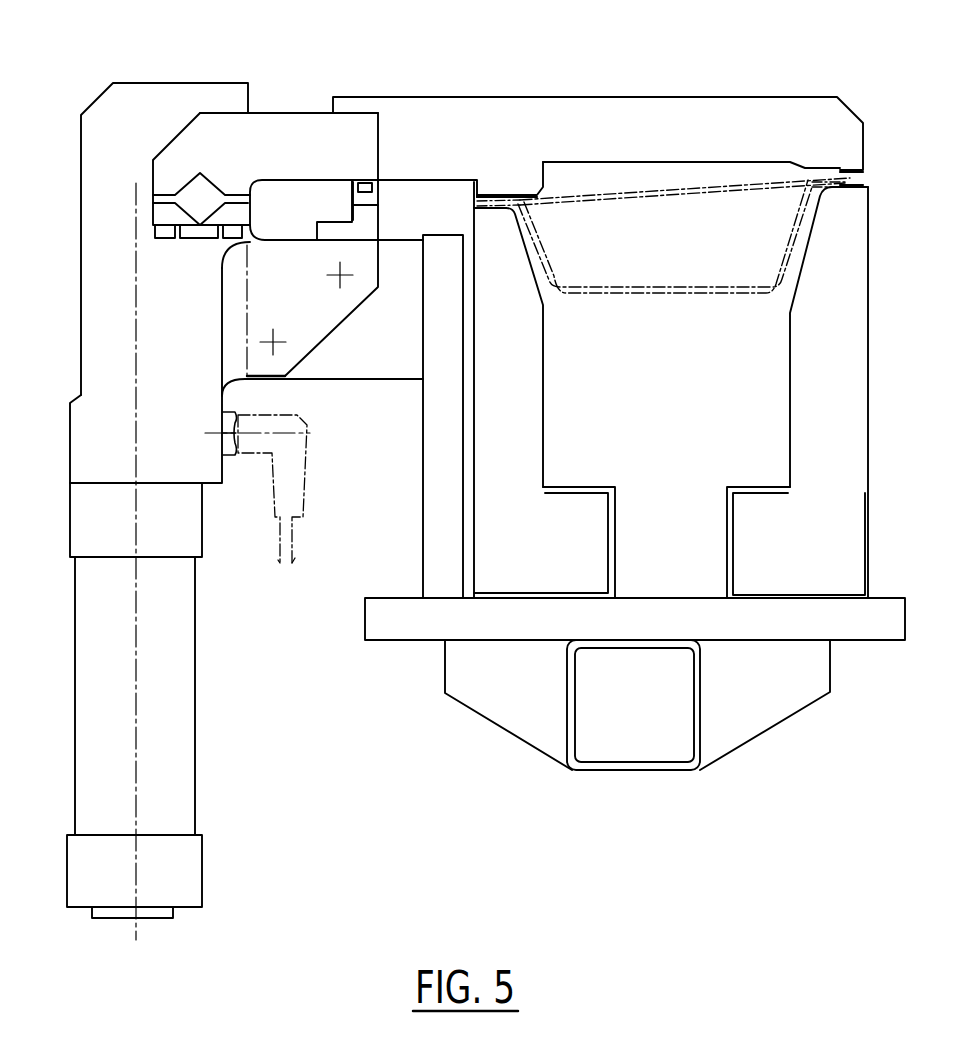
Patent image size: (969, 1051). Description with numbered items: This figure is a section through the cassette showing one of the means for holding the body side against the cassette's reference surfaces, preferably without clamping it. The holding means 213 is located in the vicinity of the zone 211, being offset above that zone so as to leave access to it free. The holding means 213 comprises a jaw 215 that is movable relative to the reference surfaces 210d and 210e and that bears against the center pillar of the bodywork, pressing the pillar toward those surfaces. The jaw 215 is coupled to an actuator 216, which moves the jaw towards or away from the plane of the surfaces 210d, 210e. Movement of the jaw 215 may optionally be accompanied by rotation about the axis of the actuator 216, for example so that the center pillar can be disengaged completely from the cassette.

The reference surface 210d is at (495, 210).
The reference surface 210e is at (840, 183).
The zone 211 is at (869, 616).
The holding means 213 is at (227, 580).
The jaw 215 is at (698, 123).
The actuator 216 is at (88, 452).